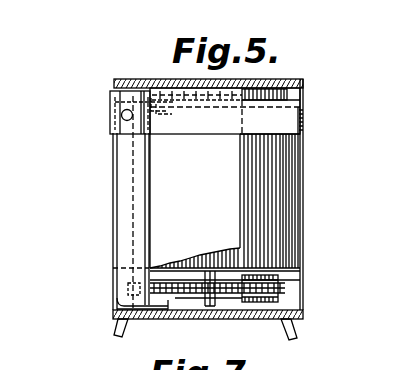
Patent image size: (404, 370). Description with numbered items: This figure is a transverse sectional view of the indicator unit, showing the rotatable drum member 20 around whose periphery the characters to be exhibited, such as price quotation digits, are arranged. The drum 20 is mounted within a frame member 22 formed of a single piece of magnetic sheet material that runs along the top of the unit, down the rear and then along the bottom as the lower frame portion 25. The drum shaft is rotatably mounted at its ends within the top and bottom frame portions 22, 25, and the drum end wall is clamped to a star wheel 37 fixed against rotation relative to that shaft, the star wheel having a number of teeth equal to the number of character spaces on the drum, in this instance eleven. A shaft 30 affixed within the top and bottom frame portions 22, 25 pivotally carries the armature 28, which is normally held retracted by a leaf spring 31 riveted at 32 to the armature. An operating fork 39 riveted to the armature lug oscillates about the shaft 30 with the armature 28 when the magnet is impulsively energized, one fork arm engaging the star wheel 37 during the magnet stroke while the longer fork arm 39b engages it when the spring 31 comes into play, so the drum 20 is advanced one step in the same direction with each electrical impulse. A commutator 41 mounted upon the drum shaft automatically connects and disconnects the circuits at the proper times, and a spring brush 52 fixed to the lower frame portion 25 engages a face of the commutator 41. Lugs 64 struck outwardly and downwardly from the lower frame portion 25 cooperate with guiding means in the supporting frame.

The rotatable drum member 20 is at (280, 243).
The frame member 22 is at (305, 84).
The bottom frame portion 25 is at (305, 314).
The armature 28 is at (219, 207).
The shaft 30 is at (133, 155).
The leaf spring 31 is at (270, 121).
The rivet 32 is at (121, 116).
The star wheel 37 is at (178, 87).
The operating fork 39 is at (152, 87).
The fork arm 39b is at (288, 88).
The commutator 41 is at (295, 293).
The spring brush 52 is at (284, 275).
The lugs 64 is at (124, 326).